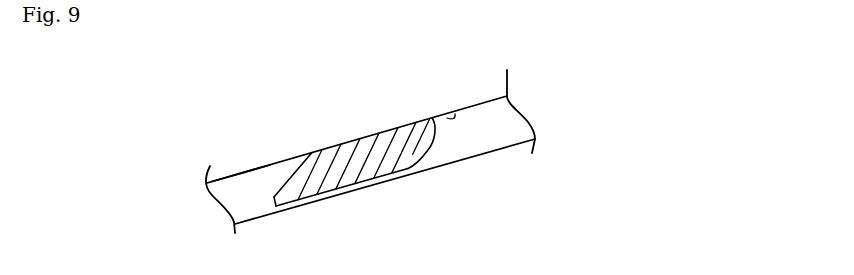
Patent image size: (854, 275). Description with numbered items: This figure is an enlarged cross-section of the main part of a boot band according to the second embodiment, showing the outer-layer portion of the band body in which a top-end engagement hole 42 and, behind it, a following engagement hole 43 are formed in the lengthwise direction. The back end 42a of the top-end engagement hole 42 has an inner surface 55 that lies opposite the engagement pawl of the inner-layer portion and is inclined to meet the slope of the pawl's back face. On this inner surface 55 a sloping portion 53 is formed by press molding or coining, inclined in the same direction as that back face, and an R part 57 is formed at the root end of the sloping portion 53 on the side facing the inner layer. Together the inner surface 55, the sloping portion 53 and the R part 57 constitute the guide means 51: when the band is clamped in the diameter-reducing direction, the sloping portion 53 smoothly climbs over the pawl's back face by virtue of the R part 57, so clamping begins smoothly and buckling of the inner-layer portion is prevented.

The top-end engagement hole 42 is at (470, 112).
The back end of the top-end engagement hole 42a is at (443, 125).
The following engagement hole 43 is at (241, 142).
The guide means 51 is at (313, 126).
The sloping portion 53 is at (427, 147).
The inner surface 55 is at (442, 137).
The R part 57 is at (407, 170).